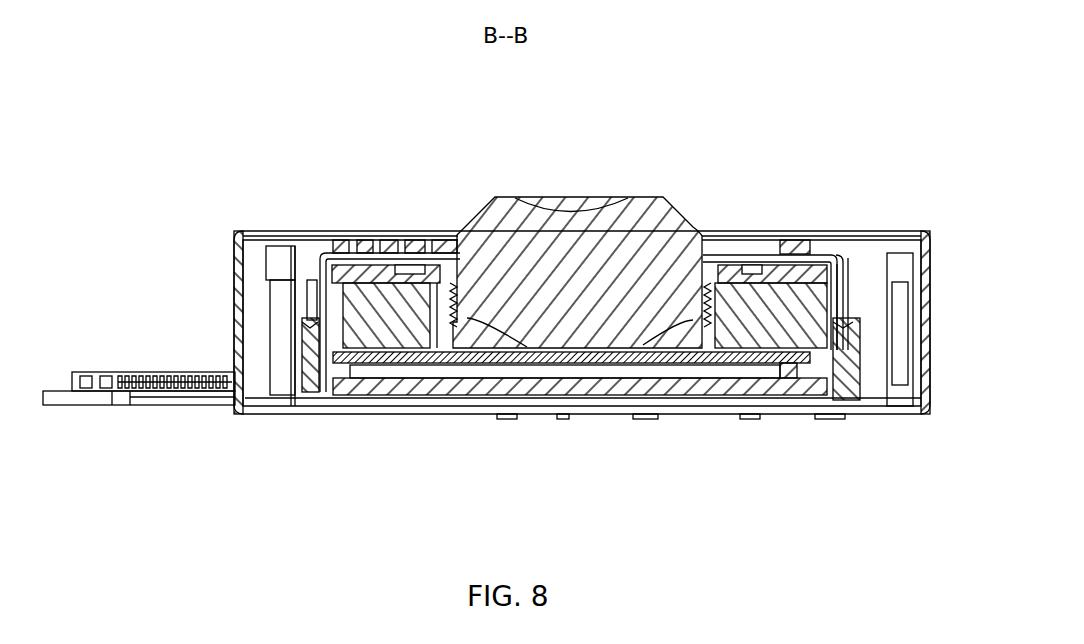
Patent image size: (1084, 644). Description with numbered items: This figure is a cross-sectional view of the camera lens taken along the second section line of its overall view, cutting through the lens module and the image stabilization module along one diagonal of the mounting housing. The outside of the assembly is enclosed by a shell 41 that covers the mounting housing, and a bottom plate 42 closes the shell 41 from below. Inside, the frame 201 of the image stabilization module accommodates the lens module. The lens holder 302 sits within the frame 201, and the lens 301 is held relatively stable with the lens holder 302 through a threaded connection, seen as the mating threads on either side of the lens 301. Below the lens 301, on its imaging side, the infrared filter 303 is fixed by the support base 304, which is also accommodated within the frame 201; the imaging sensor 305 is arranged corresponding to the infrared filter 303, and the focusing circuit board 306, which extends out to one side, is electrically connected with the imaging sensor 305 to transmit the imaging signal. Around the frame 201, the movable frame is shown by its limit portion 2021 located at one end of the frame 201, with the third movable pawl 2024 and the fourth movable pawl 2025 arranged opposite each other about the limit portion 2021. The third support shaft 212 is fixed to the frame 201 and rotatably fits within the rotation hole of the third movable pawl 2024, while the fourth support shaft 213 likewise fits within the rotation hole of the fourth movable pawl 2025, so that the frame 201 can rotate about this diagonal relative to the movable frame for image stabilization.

The shell 41 is at (238, 330).
The bottom plate 42 is at (852, 417).
The frame 201 is at (287, 320).
The third support shaft 212 is at (303, 362).
The fourth support shaft 213 is at (843, 333).
The limit portion 2021 is at (778, 250).
The third movable pawl 2024 is at (320, 253).
The fourth movable pawl 2025 is at (843, 273).
The lens 301 is at (495, 248).
The lens holder 302 is at (733, 298).
The infrared filter 303 is at (623, 363).
The support base 304 is at (740, 363).
The imaging sensor 305 is at (558, 377).
The focusing circuit board 306 is at (158, 370).